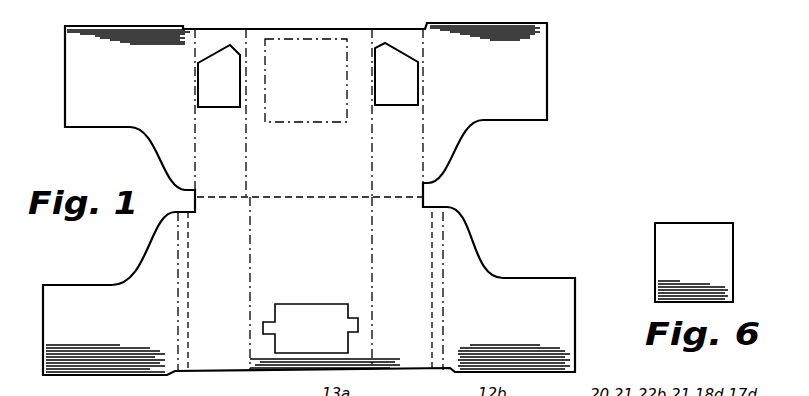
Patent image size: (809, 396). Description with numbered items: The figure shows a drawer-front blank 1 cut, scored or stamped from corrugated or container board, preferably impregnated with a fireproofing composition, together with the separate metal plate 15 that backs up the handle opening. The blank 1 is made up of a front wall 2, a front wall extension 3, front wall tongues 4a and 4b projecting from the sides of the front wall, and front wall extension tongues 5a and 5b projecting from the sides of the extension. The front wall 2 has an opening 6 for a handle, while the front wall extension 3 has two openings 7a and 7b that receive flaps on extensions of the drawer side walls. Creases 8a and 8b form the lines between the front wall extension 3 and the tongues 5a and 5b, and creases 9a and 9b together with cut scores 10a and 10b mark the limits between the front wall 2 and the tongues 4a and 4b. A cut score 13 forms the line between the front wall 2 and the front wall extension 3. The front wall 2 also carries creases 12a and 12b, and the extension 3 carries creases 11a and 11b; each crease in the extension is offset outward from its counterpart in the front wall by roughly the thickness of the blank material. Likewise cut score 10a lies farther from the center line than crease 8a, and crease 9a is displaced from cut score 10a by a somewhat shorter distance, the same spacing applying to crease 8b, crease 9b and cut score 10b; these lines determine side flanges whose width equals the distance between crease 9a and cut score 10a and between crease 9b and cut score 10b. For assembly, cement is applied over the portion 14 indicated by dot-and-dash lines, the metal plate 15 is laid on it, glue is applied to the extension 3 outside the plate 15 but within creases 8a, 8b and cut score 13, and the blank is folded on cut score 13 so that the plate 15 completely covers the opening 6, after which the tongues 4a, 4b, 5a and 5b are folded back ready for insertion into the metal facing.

In FIG. 1, the blank 1 is at (486, 230).
In FIG. 1, the front wall 2 is at (325, 300).
In FIG. 1, the front wall extension 3 is at (312, 150).
In FIG. 1, the front wall tongue 4a is at (105, 343).
In FIG. 1, the front wall tongue 4b is at (514, 341).
In FIG. 1, the front wall extension tongue 5a is at (128, 56).
In FIG. 1, the front wall extension tongue 5b is at (485, 53).
In FIG. 1, the opening 6 is at (310, 328).
In FIG. 1, the opening 7a is at (219, 76).
In FIG. 1, the opening 7b is at (396, 74).
In FIG. 1, the crease 8a is at (197, 158).
In FIG. 1, the crease 8b is at (424, 129).
In FIG. 1, the crease 9a is at (178, 283).
In FIG. 1, the crease 9b is at (444, 308).
In FIG. 1, the cut score 10a is at (190, 281).
In FIG. 1, the cut score 10b is at (432, 250).
In FIG. 1, the crease 11a is at (265, 113).
In FIG. 1, the crease 11b is at (373, 150).
In FIG. 1, the crease 12a is at (250, 281).
In FIG. 1, the crease 12b is at (374, 308).
In FIG. 1, the cut score 13 is at (318, 196).
In FIG. 1, the portion 14 is at (306, 80).
In FIG. 6, the metal plate 15 is at (694, 262).